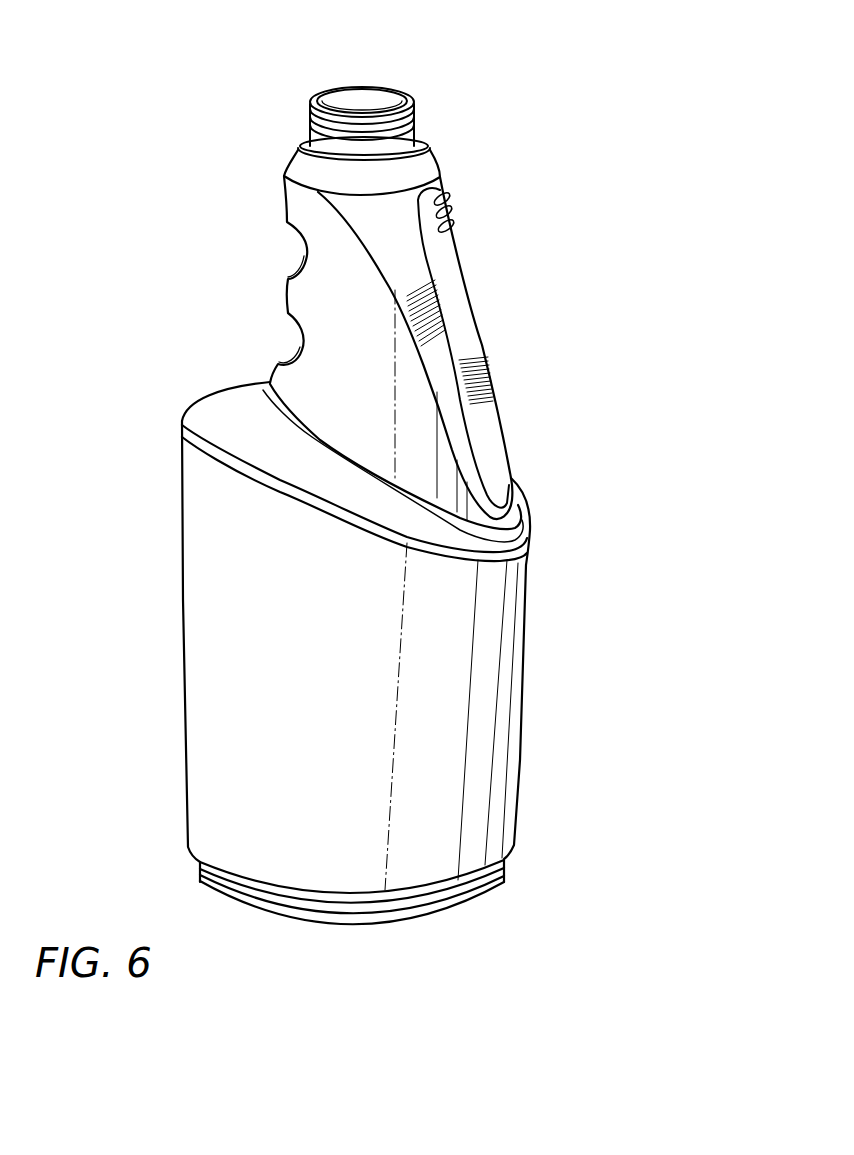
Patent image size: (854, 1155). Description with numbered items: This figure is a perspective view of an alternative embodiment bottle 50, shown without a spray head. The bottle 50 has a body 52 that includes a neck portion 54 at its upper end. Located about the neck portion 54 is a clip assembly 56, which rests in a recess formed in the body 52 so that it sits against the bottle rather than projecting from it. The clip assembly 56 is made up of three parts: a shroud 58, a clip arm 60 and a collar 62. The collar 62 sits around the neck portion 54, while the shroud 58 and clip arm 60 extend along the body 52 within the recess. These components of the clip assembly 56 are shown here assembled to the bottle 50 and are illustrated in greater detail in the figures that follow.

The bottle 50 is at (615, 676).
The body 52 is at (520, 732).
The neck portion 54 is at (413, 140).
The clip assembly 56 is at (535, 219).
The shroud 58 is at (423, 313).
The clip arm 60 is at (490, 440).
The collar 62 is at (298, 165).